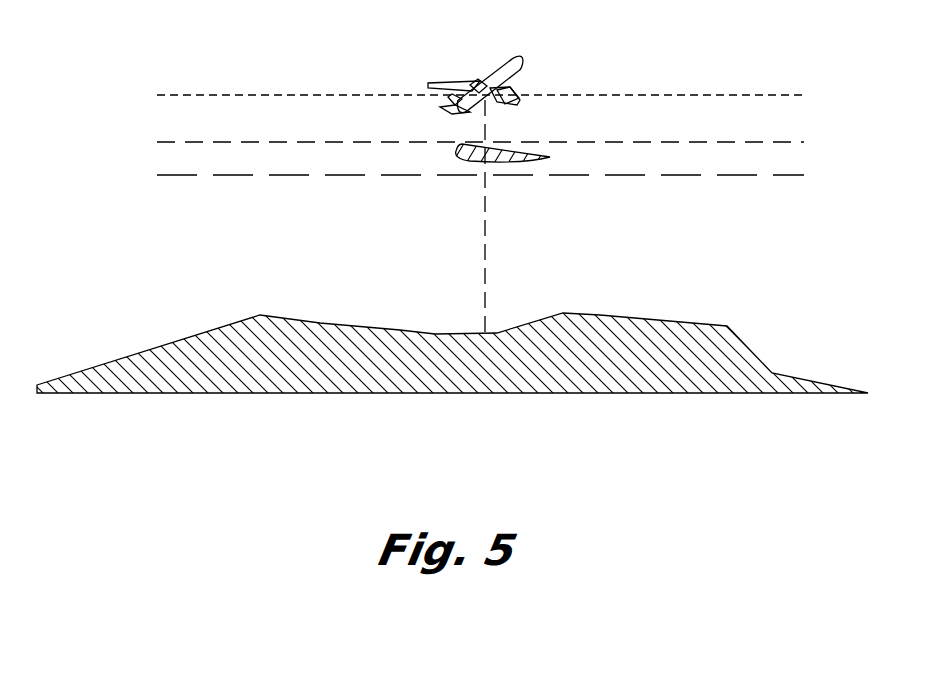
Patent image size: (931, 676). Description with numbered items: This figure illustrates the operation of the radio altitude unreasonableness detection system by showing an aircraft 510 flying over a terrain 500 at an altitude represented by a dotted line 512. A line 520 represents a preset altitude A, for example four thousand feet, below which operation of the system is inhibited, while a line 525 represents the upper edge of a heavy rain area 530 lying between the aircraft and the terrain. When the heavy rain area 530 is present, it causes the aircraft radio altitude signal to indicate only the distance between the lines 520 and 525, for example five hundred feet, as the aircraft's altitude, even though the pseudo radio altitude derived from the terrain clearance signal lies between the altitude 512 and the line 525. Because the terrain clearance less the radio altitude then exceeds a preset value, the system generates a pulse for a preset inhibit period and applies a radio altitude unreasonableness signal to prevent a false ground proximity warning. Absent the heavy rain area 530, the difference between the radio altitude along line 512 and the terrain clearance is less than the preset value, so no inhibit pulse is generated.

The terrain 500 is at (195, 336).
The aircraft 510 is at (524, 65).
The dotted line 512 is at (178, 95).
The line 525 is at (170, 142).
The line 520 is at (172, 175).
The heavy rain area 530 is at (527, 159).